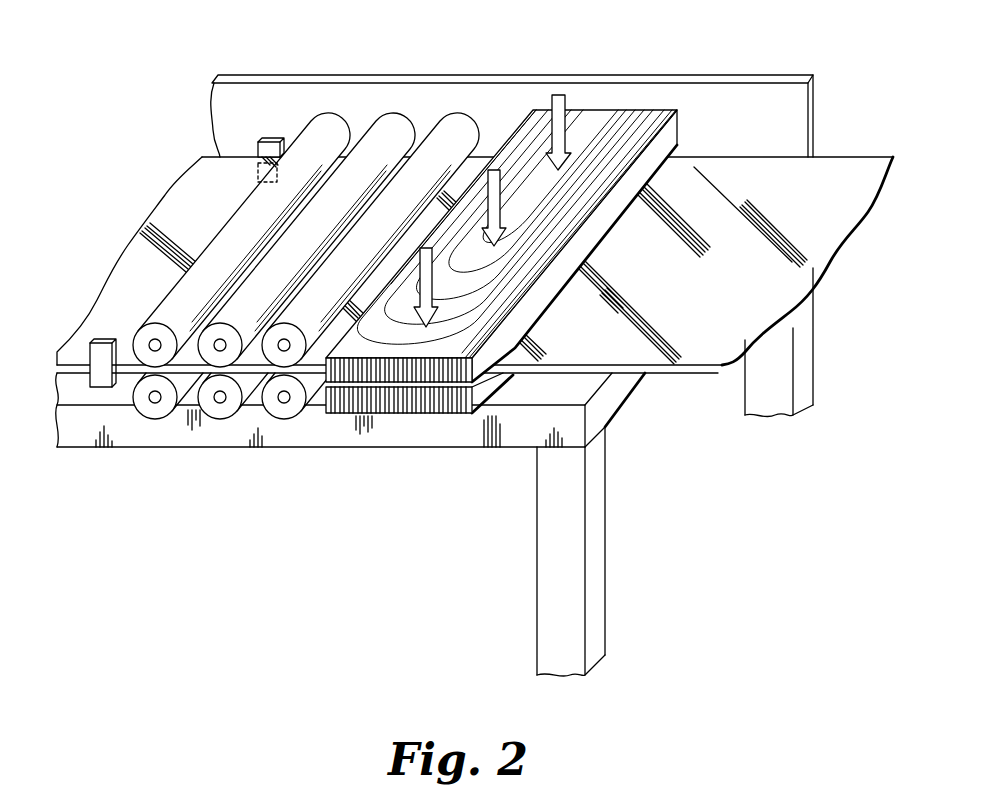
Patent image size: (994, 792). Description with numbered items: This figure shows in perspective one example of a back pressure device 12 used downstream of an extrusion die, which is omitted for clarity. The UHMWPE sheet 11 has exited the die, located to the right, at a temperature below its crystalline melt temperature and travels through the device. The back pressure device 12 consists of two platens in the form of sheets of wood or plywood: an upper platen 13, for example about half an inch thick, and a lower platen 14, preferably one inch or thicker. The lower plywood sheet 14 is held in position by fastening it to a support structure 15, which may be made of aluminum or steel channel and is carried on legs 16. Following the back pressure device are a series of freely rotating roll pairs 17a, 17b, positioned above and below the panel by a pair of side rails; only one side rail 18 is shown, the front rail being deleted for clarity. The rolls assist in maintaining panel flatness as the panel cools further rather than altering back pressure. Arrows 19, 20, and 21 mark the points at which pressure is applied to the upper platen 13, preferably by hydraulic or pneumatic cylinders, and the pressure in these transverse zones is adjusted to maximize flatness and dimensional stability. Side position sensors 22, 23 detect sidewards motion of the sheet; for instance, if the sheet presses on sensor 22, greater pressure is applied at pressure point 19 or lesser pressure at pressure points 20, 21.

The UHMWPE sheet 11 is at (852, 165).
The back pressure device 12 is at (472, 460).
The upper platen 13 is at (600, 108).
The lower platen 14 is at (300, 400).
The support structure 15 is at (233, 438).
The legs 16 is at (793, 364).
The upper rolls of roll pairs 17a is at (140, 352).
The lower rolls of roll pairs 17b is at (149, 408).
The side rail 18 is at (252, 97).
The pressure point 19 is at (436, 280).
The pressure point 20 is at (502, 200).
The pressure point 21 is at (563, 136).
The side position sensor 22 is at (268, 140).
The side position sensor 23 is at (97, 343).